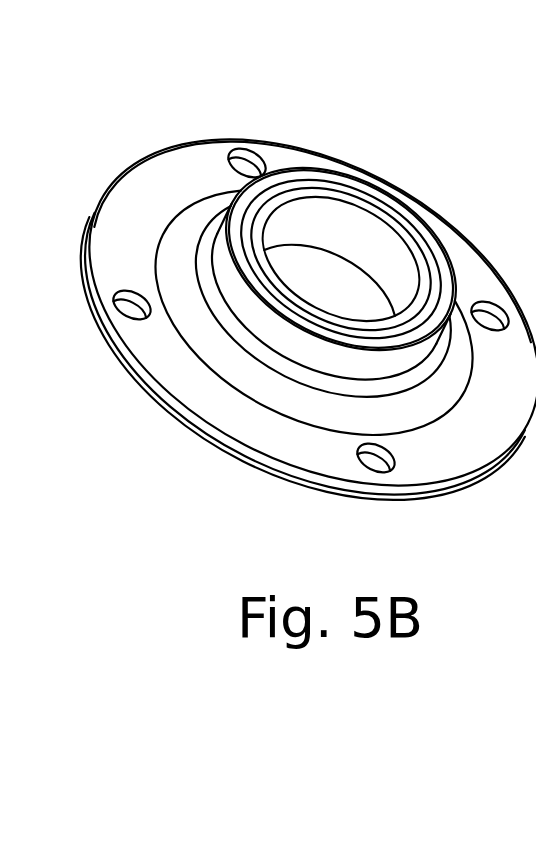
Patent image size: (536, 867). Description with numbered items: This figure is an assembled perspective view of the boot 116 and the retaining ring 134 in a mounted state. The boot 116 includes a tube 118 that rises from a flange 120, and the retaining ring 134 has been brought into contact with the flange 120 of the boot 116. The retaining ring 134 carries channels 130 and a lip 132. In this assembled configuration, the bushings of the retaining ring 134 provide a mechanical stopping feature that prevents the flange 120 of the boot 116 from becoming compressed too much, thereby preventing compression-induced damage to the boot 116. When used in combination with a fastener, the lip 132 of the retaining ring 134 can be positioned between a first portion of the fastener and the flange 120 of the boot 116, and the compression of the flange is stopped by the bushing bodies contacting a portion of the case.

The boot 116 is at (403, 190).
The tube 118 is at (303, 163).
The flange 120 is at (196, 433).
The channels 130 is at (248, 140).
The lip 132 is at (173, 140).
The retaining ring 134 is at (145, 192).